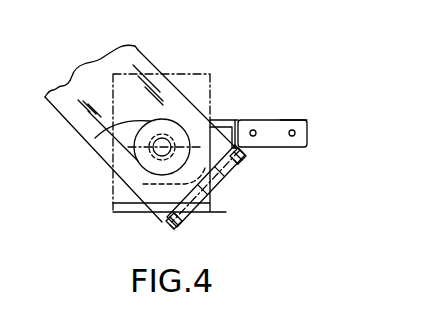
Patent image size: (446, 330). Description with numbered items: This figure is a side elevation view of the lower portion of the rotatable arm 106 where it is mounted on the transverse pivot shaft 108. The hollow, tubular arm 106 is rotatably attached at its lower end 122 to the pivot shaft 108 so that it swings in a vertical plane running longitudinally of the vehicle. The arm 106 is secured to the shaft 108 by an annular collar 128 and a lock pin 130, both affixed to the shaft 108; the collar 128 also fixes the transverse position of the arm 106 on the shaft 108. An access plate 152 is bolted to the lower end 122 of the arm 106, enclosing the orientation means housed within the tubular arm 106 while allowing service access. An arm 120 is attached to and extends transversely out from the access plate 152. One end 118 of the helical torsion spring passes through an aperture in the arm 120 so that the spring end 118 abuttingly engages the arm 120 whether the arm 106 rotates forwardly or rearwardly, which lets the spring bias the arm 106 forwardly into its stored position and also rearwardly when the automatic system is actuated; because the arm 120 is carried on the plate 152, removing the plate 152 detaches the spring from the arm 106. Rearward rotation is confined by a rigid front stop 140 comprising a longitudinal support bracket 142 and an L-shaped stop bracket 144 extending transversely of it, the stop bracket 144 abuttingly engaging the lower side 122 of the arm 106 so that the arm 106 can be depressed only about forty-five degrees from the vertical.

The rotatable arm 106 is at (146, 55).
The transverse pivot shaft 108 is at (113, 178).
The end of the torsion spring 118 is at (226, 178).
The arm 120 is at (128, 215).
The lower end of the rotatable arm 122 is at (165, 218).
The annular collar 128 is at (84, 140).
The lock pin 130 is at (152, 154).
The front stop 140 is at (275, 151).
The longitudinal support bracket 142 is at (278, 120).
The L-shaped stop bracket 144 is at (214, 118).
The access plate 152 is at (220, 208).